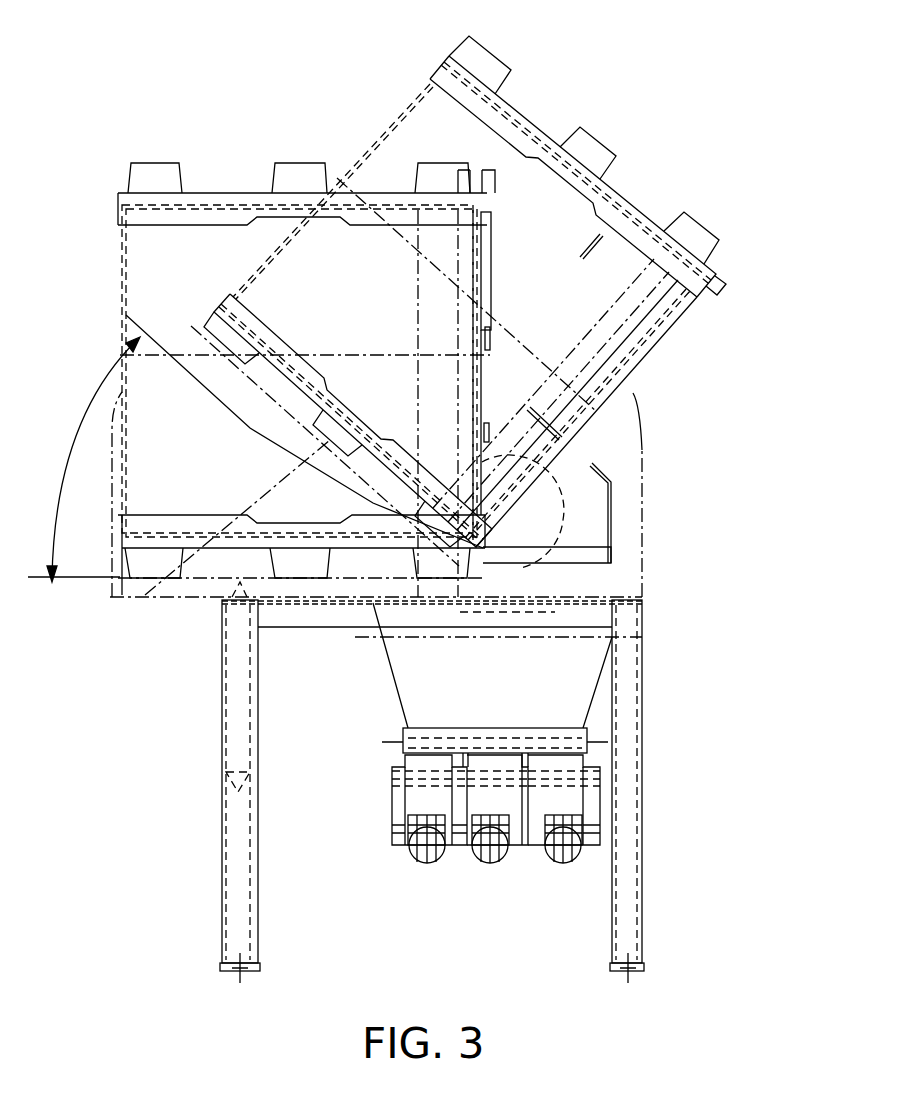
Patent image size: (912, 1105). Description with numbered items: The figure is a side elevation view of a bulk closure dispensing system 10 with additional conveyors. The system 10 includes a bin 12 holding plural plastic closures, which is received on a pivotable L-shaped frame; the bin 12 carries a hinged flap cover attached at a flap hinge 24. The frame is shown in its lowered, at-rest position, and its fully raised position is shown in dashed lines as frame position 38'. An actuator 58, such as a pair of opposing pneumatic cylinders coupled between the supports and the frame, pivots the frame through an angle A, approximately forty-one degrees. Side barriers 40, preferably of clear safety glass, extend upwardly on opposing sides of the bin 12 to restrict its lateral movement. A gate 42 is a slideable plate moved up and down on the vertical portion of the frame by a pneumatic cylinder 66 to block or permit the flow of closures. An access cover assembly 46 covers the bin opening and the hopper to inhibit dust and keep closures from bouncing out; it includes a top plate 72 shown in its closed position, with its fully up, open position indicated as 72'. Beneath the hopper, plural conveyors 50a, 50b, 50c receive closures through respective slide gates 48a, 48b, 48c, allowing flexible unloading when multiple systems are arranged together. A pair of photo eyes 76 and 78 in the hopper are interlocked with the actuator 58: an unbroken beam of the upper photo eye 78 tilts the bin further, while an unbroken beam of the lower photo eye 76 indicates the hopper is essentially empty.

The bulk closure dispensing system 10 is at (97, 758).
The bin 12 is at (193, 257).
The flap hinge 24 is at (560, 540).
The frame in fully raised position 38' is at (622, 167).
The side barriers 40 is at (628, 441).
The gate 42 is at (505, 355).
The access cover assembly 46 is at (608, 462).
The slide gate 48a is at (562, 767).
The slide gate 48b is at (499, 762).
The slide gate 48c is at (447, 763).
The conveyor 50a is at (565, 853).
The conveyor 50b is at (488, 850).
The conveyor 50c is at (408, 848).
The actuator 58 is at (253, 677).
The pneumatic cylinder 66 is at (493, 234).
The top plate 72 is at (627, 403).
The top plate in up position 72' is at (643, 192).
The lower photo eye 76 is at (595, 742).
The upper photo eye 78 is at (650, 622).
The angle A is at (84, 459).